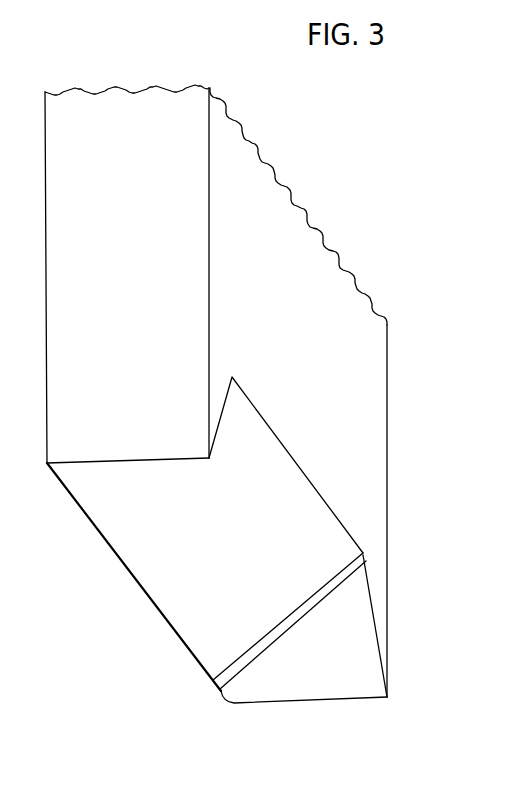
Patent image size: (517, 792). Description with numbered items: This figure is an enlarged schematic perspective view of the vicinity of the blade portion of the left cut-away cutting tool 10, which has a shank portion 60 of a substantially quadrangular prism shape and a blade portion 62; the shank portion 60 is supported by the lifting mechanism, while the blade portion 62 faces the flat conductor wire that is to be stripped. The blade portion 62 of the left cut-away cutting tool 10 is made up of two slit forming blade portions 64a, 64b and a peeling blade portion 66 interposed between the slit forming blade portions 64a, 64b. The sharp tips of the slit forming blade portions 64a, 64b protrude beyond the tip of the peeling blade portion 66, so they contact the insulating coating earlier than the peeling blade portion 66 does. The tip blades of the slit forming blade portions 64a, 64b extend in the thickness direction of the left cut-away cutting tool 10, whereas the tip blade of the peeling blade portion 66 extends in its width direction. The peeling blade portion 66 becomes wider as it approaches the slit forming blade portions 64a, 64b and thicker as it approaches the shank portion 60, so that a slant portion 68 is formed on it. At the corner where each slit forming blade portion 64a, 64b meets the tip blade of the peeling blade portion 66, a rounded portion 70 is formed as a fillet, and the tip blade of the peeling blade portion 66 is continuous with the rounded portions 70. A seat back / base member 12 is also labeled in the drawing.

The left cut-away cutting tool 10 is at (227, 415).
The seat back / base member 12 is at (227, 415).
The shank portion 60 is at (370, 388).
The blade portion 62 is at (217, 574).
The slit forming blade portion 64a is at (130, 445).
The slit forming blade portion 64b is at (268, 683).
The peeling blade portion 66 is at (104, 537).
The slant portion 68 is at (290, 480).
The rounded portion 70 is at (47, 463).